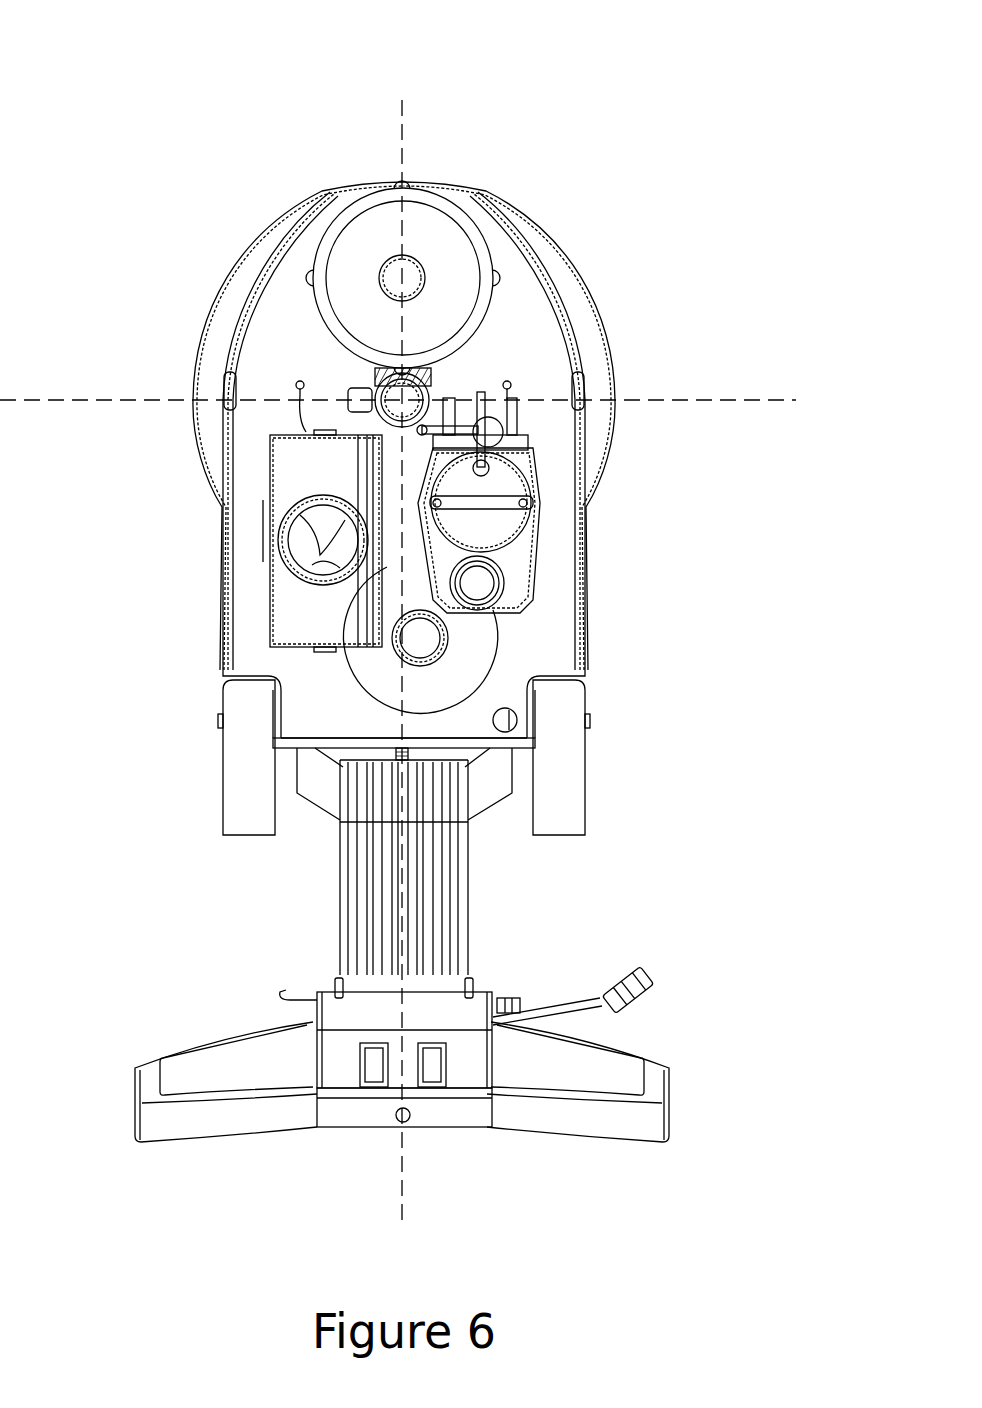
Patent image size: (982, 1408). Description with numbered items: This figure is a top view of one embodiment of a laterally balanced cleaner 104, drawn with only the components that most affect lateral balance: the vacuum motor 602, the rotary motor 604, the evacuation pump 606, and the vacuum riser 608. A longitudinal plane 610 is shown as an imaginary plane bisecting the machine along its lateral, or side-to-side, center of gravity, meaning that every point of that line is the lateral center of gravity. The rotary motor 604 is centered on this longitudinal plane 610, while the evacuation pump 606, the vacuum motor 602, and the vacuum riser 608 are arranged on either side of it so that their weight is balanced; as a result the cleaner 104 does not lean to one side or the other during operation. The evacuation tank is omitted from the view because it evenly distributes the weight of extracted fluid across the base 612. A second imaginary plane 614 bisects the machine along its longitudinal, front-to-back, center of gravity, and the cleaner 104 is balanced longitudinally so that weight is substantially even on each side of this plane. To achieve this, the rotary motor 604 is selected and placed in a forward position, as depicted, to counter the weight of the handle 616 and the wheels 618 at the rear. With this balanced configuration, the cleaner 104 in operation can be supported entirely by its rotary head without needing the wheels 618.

The cleaner 104 is at (128, 92).
The longitudinal plane 610 is at (400, 133).
The imaginary plane 614 is at (72, 402).
The base 612 is at (540, 340).
The rotary motor 604 is at (490, 234).
The vacuum riser 608 is at (270, 577).
The evacuation pump 606 is at (533, 508).
The vacuum motor 602 is at (478, 634).
The wheels 618 is at (222, 780).
The handle 616 is at (470, 893).